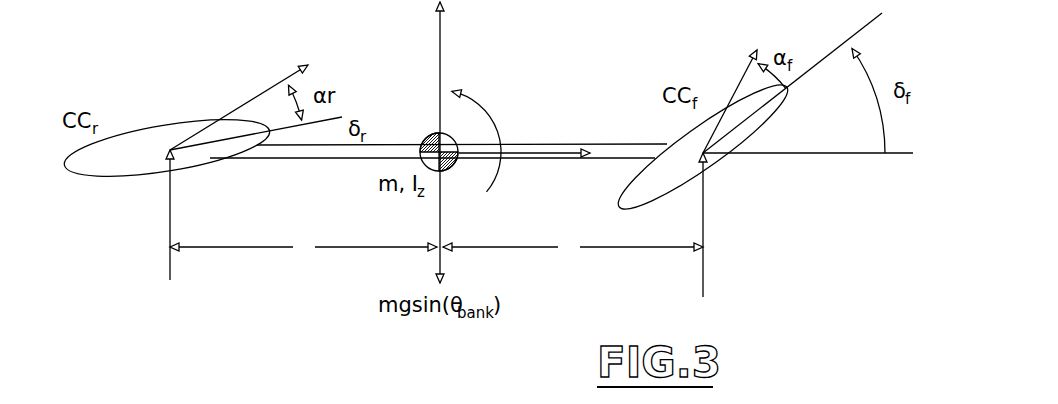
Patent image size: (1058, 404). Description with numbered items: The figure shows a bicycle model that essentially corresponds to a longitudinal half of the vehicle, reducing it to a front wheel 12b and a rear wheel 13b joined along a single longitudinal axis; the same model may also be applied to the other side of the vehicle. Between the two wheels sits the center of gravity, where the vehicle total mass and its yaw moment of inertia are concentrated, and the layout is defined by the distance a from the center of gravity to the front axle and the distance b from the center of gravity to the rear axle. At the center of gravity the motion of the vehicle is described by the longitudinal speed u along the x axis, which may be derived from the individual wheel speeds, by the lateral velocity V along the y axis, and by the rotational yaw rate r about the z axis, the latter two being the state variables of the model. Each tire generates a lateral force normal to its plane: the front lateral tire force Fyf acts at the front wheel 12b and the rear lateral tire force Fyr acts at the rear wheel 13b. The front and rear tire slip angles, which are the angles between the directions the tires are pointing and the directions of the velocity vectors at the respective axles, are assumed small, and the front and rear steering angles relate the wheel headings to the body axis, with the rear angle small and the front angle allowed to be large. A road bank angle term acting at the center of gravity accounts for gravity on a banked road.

The front wheel 12b is at (720, 160).
The rear wheel 13b is at (140, 173).
The vehicle lateral velocity V is at (428, 142).
The vehicle longitudinal speed u is at (524, 170).
The vehicle rotational yaw rate r is at (476, 153).
The rear lateral tire force Fyr is at (145, 220).
The front lateral tire force Fyf is at (722, 229).
The distance from center of gravity to front axle a is at (573, 248).
The distance from center of gravity to rear axle b is at (303, 248).